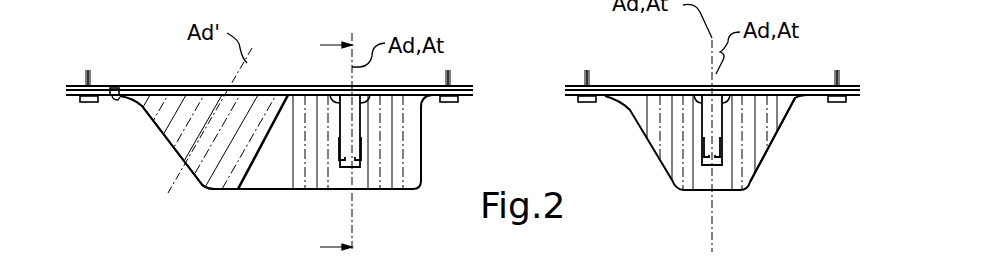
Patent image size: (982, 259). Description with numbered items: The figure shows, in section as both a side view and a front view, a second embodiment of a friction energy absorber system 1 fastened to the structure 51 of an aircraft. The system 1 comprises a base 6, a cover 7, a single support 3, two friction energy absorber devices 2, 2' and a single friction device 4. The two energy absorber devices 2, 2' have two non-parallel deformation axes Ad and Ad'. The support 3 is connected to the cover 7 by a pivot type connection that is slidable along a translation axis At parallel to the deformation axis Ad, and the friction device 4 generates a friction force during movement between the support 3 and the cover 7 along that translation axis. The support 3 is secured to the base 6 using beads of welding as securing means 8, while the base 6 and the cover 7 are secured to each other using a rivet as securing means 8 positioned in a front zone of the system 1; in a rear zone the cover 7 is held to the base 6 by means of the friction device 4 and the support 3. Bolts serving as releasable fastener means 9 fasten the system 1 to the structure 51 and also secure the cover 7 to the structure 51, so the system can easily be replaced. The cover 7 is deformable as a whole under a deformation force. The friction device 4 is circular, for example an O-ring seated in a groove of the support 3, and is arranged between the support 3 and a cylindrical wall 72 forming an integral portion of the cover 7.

The friction energy absorber system 1 is at (78, 193).
The friction energy absorber device 2 is at (434, 173).
The friction energy absorber device 2' is at (254, 173).
The support 3 is at (353, 108).
The friction device 4 is at (360, 158).
The structure 51 is at (175, 84).
The base 6 is at (253, 87).
The cover 7 is at (197, 187).
The cylindrical wall 72 is at (347, 188).
The securing means 8 is at (115, 100).
The releasable fastener means 9 is at (88, 102).